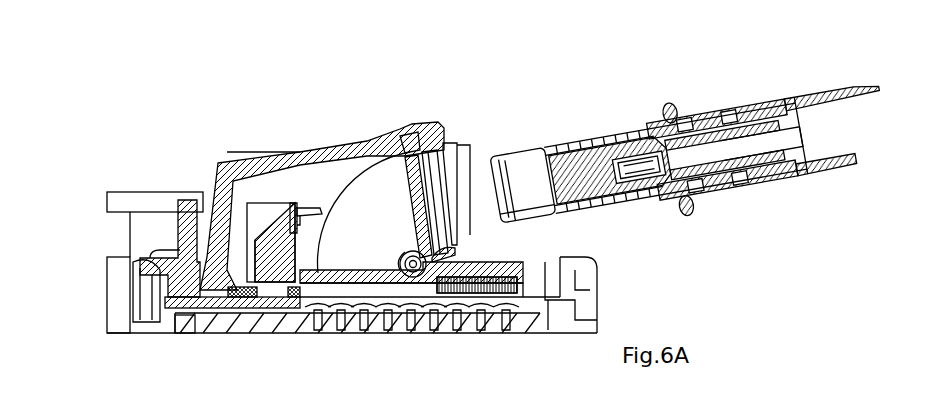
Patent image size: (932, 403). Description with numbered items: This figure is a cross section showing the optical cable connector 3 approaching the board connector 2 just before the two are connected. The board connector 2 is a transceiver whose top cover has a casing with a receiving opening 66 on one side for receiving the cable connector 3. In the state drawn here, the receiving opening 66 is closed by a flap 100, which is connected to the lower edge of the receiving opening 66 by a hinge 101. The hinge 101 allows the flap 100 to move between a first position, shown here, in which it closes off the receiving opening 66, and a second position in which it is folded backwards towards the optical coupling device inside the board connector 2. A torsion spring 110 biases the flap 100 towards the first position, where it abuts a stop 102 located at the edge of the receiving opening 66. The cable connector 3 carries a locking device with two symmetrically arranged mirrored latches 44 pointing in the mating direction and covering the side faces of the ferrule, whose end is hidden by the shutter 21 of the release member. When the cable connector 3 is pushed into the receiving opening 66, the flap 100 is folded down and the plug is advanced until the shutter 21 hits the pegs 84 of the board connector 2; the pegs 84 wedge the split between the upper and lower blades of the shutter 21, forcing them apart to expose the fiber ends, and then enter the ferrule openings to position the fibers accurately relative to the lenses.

The board connector 2 is at (215, 150).
The optical cable connector 3 is at (606, 116).
The shutter 21 is at (547, 207).
The latches 44 is at (532, 160).
The receiving opening 66 is at (450, 113).
The pegs 84 is at (312, 213).
The flap 100 is at (406, 192).
The hinge 101 is at (416, 272).
The stop 102 is at (420, 153).
The torsion spring 110 is at (406, 270).